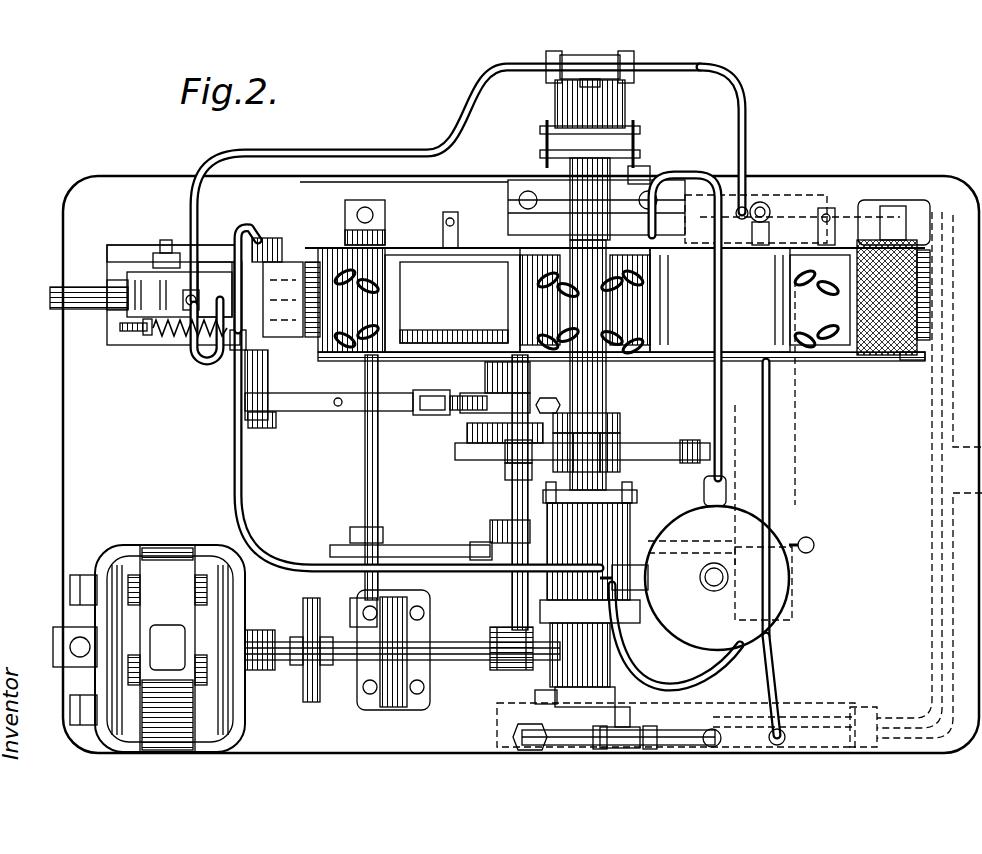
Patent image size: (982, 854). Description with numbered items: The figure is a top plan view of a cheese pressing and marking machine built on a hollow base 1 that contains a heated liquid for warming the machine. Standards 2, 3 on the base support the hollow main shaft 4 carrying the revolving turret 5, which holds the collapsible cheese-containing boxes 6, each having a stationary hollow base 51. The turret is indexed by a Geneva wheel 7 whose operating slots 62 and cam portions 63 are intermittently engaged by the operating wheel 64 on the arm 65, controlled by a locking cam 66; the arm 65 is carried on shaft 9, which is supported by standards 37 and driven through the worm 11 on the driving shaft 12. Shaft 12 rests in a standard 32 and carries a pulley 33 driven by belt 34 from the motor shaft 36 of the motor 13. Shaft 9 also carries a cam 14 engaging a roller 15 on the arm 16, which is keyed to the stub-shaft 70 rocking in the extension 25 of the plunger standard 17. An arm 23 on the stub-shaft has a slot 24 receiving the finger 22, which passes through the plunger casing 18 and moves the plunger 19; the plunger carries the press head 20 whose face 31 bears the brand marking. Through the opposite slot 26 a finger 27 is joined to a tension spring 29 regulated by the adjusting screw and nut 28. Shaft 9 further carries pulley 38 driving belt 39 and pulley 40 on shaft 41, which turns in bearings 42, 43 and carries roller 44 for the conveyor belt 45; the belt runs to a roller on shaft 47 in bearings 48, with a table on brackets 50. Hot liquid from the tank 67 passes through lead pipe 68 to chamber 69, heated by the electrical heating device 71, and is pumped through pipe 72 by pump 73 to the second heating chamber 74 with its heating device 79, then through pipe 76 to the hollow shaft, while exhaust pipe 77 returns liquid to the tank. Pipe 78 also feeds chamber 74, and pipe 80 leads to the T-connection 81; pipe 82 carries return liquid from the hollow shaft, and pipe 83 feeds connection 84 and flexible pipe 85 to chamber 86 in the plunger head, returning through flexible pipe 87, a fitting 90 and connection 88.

The hollow base 1 is at (459, 190).
The standard 2 is at (512, 222).
The standard 3 is at (644, 500).
The hollow main shaft 4 is at (607, 396).
The hollow rotor or revolving turret 5 is at (693, 362).
The collapsible cheese-containing boxes 6 is at (615, 298).
The Geneva wheel 7 is at (458, 452).
The shaft 9 is at (512, 478).
The worm 11 is at (495, 627).
The driving shaft 12 is at (455, 661).
The motor 13 is at (155, 545).
The cam 14 is at (465, 412).
The roller 15 is at (433, 392).
The arm 16 is at (326, 411).
The plunger standard 17 is at (107, 345).
The plunger casing 18 is at (135, 275).
The plunger 19 is at (92, 309).
The press head 20 is at (295, 262).
The finger 22 is at (165, 240).
The arm 23 is at (206, 262).
The slot 24 is at (158, 253).
The extension 25 is at (270, 372).
The slot 26 is at (118, 290).
The finger 27 is at (148, 336).
The adjusting screw and nut 28 is at (130, 332).
The tension spring 29 is at (176, 338).
The face 31 is at (312, 262).
The standard 32 is at (390, 707).
The pulley 33 is at (305, 612).
The belt 34 is at (300, 637).
The motor shaft 36 is at (287, 662).
The standards 37 is at (503, 362).
The pulley 38 is at (476, 543).
The belt 39 is at (430, 545).
The pulley 40 is at (336, 560).
The shaft 41 is at (379, 487).
The bearing 42 is at (350, 600).
The bearing 43 is at (387, 215).
The roller 44 is at (338, 398).
The conveyor belt 45 is at (872, 358).
The shaft 47 is at (915, 361).
The bearings 48 is at (922, 218).
The brackets 50 is at (458, 245).
The stationary hollow base 51 is at (452, 303).
The operating slots 62 is at (592, 446).
The cam portions 63 is at (533, 460).
The operating wheel 64 is at (505, 472).
The arm 65 is at (467, 435).
The locking cam 66 is at (578, 419).
The hot water tank or reservoir 67 is at (790, 580).
The lead pipe 68 is at (773, 655).
The chamber 69 is at (843, 705).
The stub-shaft 70 is at (263, 428).
The electrical heating device 71 is at (795, 712).
The pipe 72 is at (566, 746).
The pump 73 is at (619, 749).
The second heating chamber 74 is at (795, 212).
The pipe 76 is at (724, 676).
The exhaust pipe 77 is at (639, 574).
The pipe 78 is at (771, 462).
The electrical heating device 79 is at (812, 222).
The pipe 80 is at (748, 114).
The T-connection 81 is at (594, 60).
The pipe 82 is at (666, 174).
The pipe 83 is at (378, 152).
The connection 84 is at (110, 265).
The flexible pipe 85 is at (207, 372).
The chamber 86 is at (266, 238).
The flexible pipe 87 is at (247, 225).
The connection 88 is at (247, 342).
The ball fitting 90 is at (184, 250).